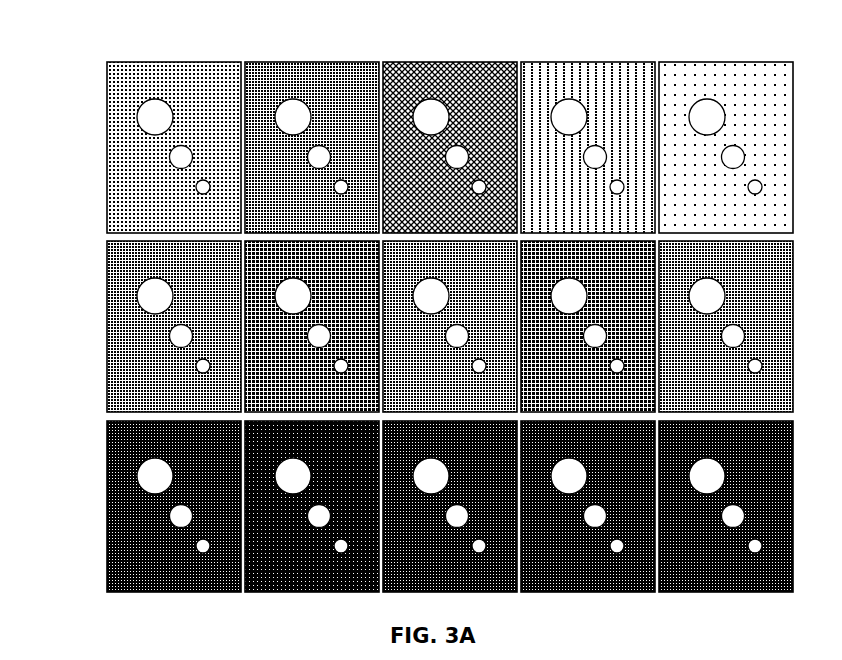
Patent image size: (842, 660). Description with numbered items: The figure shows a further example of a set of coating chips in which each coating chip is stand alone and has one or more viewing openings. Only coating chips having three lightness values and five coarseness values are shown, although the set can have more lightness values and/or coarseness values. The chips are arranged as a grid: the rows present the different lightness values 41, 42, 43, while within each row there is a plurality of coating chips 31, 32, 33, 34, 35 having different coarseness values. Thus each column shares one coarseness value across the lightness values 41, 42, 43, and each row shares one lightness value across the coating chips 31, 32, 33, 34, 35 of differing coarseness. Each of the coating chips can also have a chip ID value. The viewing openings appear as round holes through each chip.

The coating chip 31 is at (164, 44).
The coating chip 32 is at (303, 44).
The coating chip 33 is at (440, 44).
The coating chip 34 is at (578, 44).
The coating chip 35 is at (714, 44).
The lightness value 41 is at (86, 144).
The lightness value 42 is at (84, 312).
The lightness value 43 is at (86, 472).